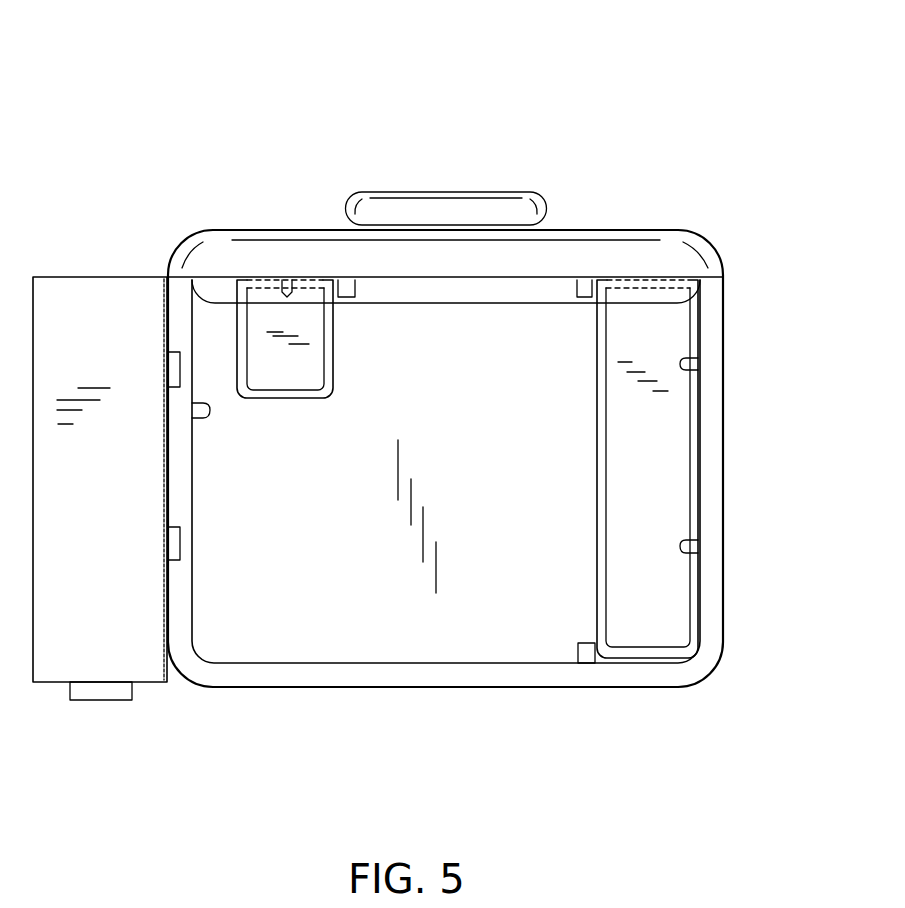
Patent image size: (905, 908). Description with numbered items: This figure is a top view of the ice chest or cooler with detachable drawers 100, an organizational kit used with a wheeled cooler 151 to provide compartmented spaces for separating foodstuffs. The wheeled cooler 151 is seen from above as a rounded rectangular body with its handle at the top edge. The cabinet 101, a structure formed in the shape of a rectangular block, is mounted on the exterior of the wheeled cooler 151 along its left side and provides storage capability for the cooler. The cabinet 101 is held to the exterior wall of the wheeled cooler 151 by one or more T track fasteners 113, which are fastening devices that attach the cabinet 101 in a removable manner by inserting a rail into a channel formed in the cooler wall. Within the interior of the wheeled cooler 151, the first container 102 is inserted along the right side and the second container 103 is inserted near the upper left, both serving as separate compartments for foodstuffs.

The ice chest or cooler with detachable drawers 100 is at (104, 142).
The cabinet 101 is at (85, 295).
The first container 102 is at (687, 573).
The second container 103 is at (333, 390).
The T track fastener 113 is at (175, 388).
The wheeled cooler 151 is at (710, 438).